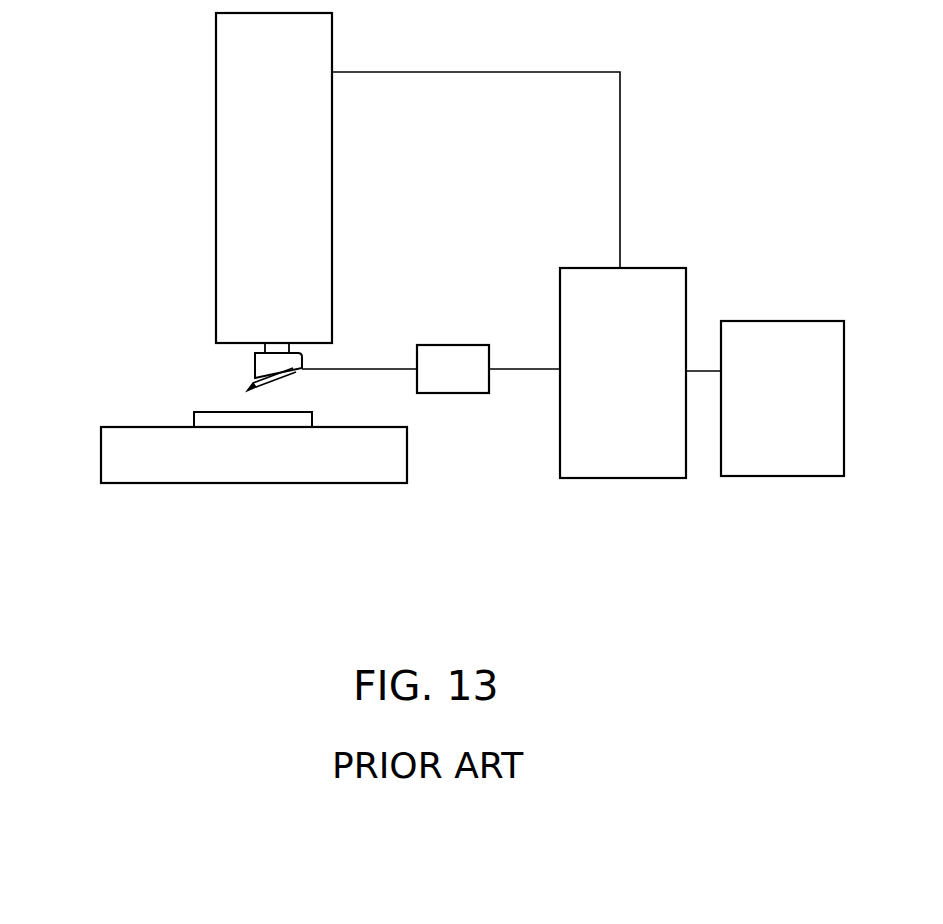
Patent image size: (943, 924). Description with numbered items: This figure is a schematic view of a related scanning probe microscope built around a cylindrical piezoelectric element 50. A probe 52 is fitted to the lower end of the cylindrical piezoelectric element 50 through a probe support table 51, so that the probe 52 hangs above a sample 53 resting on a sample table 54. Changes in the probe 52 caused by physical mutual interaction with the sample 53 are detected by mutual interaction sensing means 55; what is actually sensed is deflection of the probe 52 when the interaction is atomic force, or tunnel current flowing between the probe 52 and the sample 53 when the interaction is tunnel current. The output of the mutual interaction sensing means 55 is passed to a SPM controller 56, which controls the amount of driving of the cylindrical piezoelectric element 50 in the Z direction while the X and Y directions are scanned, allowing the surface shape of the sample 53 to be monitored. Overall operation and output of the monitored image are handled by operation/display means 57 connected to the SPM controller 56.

The cylindrical piezoelectric element 50 is at (226, 84).
The probe support table 51 is at (258, 357).
The probe 52 is at (253, 384).
The sample 53 is at (205, 417).
The sample table 54 is at (108, 437).
The mutual interaction sensing means 55 is at (459, 357).
The SPM controller 56 is at (655, 282).
The operation/display means 57 is at (818, 328).